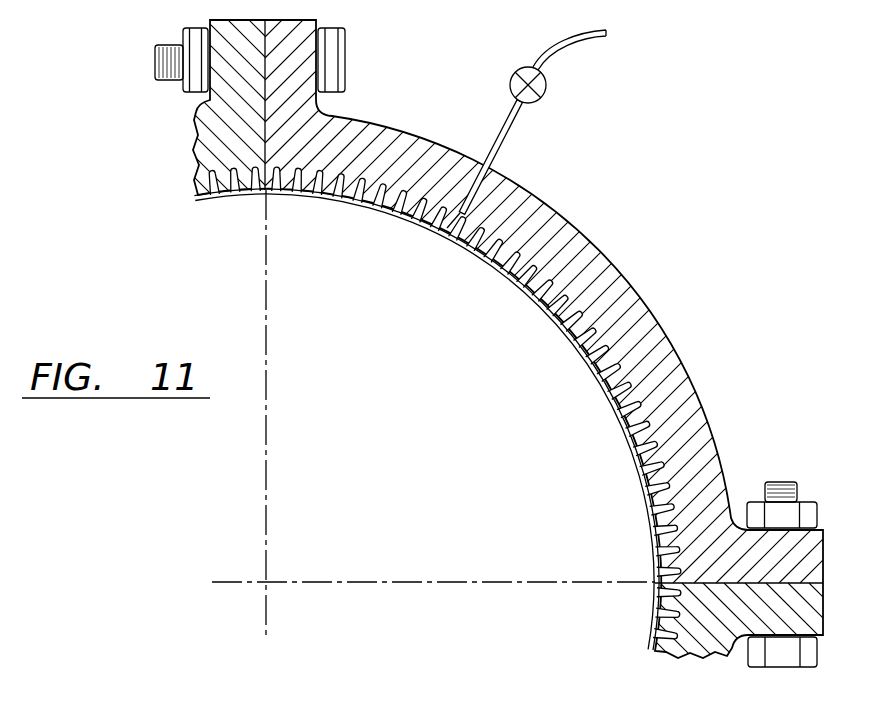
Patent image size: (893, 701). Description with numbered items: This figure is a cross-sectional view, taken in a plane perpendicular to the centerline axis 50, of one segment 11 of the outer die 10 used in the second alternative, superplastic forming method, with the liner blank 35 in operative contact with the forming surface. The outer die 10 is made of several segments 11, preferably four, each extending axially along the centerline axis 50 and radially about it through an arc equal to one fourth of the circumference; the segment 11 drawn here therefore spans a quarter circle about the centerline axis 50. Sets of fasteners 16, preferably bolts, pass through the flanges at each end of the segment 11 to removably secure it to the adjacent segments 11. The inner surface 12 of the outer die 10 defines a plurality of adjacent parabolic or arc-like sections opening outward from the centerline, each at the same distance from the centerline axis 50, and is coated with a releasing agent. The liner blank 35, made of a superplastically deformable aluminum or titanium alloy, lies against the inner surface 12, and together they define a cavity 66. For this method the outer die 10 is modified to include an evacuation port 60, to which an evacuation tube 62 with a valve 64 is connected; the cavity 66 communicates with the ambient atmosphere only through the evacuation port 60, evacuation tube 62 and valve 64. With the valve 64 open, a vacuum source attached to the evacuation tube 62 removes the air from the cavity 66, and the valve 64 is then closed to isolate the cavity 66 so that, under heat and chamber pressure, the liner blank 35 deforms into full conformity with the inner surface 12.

The outer die 10 is at (509, 332).
The segment 11 is at (677, 357).
The inner surface 12 is at (580, 300).
The fasteners 16 is at (346, 68).
The liner blank 35 is at (497, 267).
The centerline axis 50 is at (268, 580).
The evacuation port 60 is at (452, 222).
The evacuation tube 62 is at (503, 140).
The valve 64 is at (546, 90).
The cavity 66 is at (447, 404).